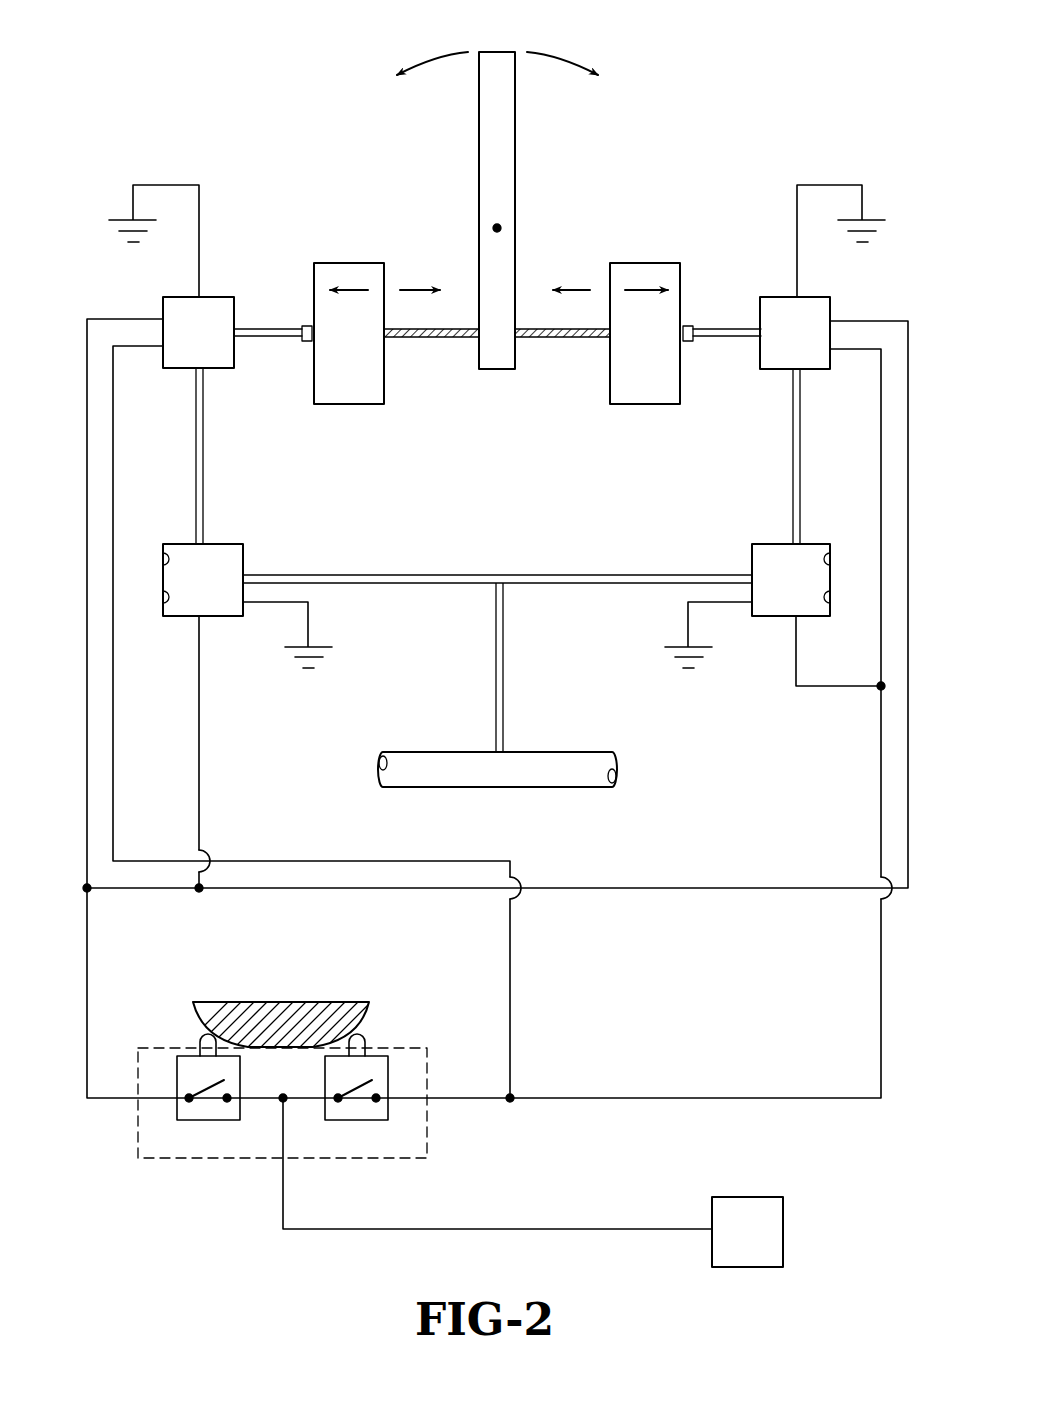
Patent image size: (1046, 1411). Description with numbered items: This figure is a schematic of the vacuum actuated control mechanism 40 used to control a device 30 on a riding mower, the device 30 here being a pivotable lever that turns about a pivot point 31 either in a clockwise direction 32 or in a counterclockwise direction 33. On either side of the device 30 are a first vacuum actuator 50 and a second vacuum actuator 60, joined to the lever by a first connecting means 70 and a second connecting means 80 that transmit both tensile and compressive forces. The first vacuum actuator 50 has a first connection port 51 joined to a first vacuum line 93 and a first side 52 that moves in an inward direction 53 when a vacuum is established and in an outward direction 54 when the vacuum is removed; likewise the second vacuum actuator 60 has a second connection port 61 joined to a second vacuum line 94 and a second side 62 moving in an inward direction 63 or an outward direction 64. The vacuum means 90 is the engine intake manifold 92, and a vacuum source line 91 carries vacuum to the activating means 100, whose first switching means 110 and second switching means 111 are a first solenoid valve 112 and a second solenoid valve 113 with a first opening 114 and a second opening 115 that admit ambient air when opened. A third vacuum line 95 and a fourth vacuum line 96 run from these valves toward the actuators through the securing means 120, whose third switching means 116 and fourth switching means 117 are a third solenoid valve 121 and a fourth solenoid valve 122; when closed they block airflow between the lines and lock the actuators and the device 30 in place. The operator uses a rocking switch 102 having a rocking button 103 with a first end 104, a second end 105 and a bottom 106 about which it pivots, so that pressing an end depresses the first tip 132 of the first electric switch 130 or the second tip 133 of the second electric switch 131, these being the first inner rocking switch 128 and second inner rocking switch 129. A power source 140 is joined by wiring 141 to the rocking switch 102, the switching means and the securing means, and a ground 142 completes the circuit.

The device 30 is at (515, 145).
The pivot point 31 is at (495, 226).
The clockwise direction 32 is at (545, 52).
The counterclockwise direction 33 is at (448, 52).
The vacuum actuated control mechanism 40 is at (248, 82).
The first vacuum actuator 50 is at (349, 333).
The first connection port 51 is at (303, 328).
The first side 52 is at (388, 392).
The inward direction 53 is at (368, 289).
The outward direction 54 is at (400, 289).
The second vacuum actuator 60 is at (645, 333).
The second connection port 61 is at (692, 328).
The second side 62 is at (608, 392).
The inward direction 63 is at (625, 289).
The outward direction 64 is at (590, 289).
The first connecting means 70 is at (432, 338).
The second connecting means 80 is at (563, 338).
The vacuum means 90 is at (557, 760).
The vacuum source line 91 is at (503, 672).
The intake manifold 92 is at (438, 760).
The first vacuum line 93 is at (264, 338).
The second vacuum line 94 is at (733, 338).
The third vacuum line 95 is at (205, 466).
The fourth vacuum line 96 is at (791, 466).
The activating means 100 is at (182, 1215).
The rocking switch 102 is at (427, 1138).
The rocking button 103 is at (275, 1002).
The first end 104 is at (203, 1003).
The second end 105 is at (362, 1003).
The bottom 106 is at (280, 1048).
The first switching means 110 is at (232, 548).
The second switching means 111 is at (763, 548).
The first solenoid valve 112 is at (203, 580).
The second solenoid valve 113 is at (791, 580).
The first opening 114 is at (163, 559).
The second opening 115 is at (830, 559).
The third switching means 116 is at (174, 360).
The fourth switching means 117 is at (820, 363).
The securing means 120 is at (230, 282).
The third solenoid valve 121 is at (198, 332).
The fourth solenoid valve 122 is at (795, 333).
The first inner rocking switch 128 is at (181, 1110).
The second inner rocking switch 129 is at (374, 1113).
The first electric switch 130 is at (195, 1121).
The second electric switch 131 is at (335, 1121).
The first tip 132 is at (200, 1047).
The second tip 133 is at (366, 1047).
The power source 140 is at (747, 1232).
The wiring 141 is at (110, 318).
The ground 142 is at (118, 220).